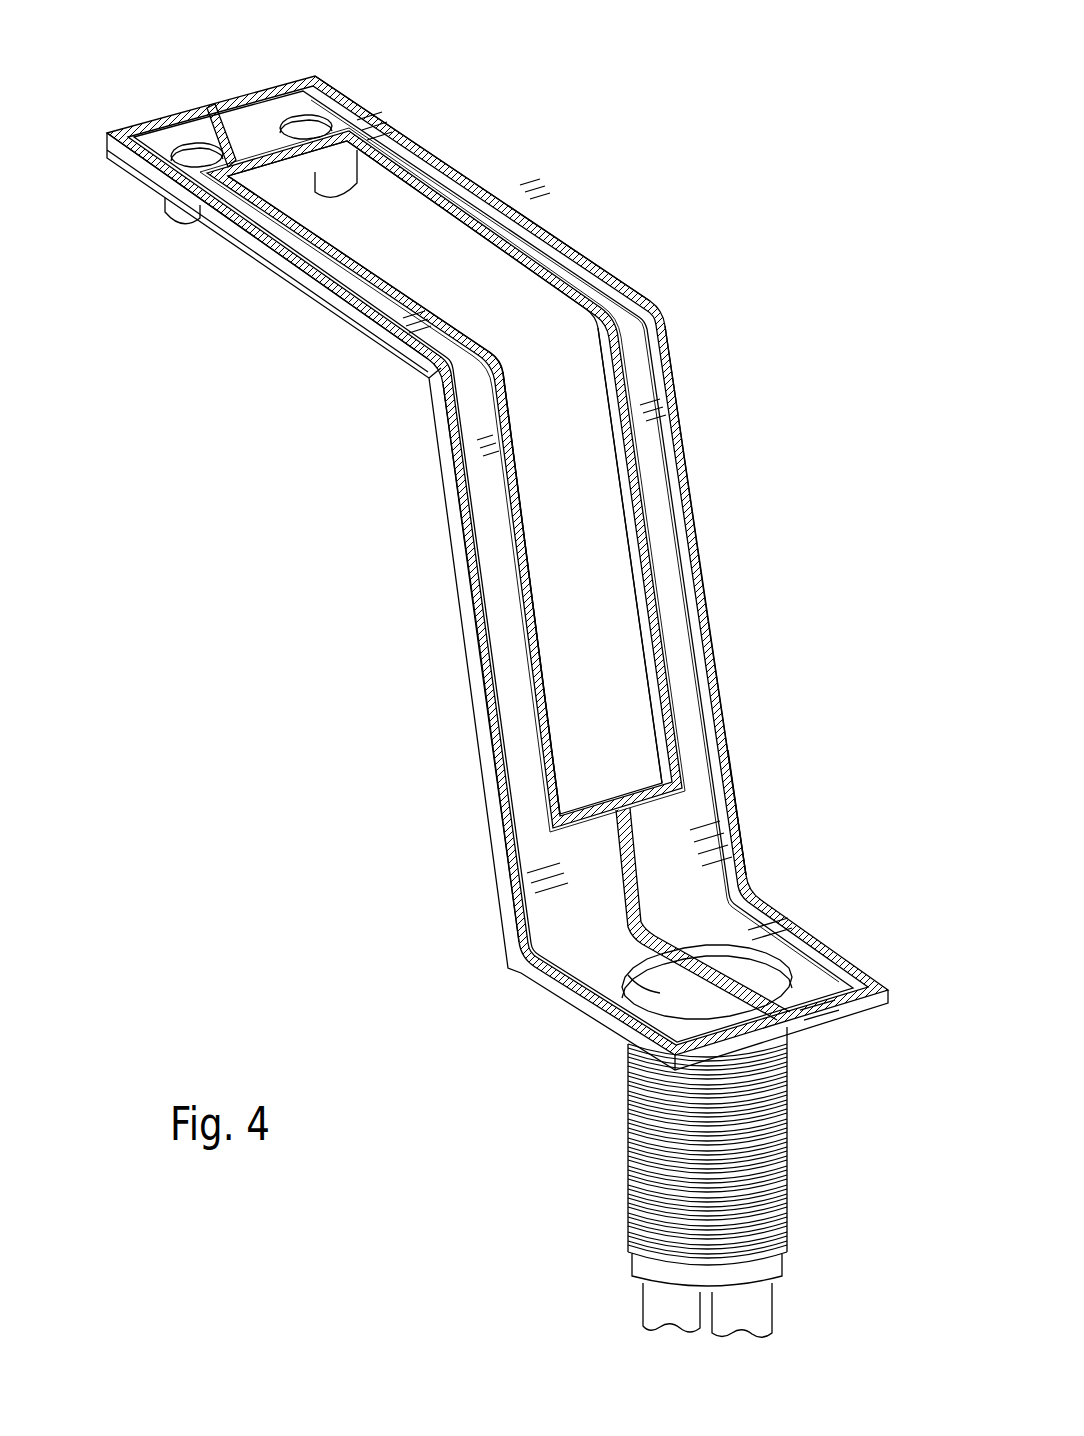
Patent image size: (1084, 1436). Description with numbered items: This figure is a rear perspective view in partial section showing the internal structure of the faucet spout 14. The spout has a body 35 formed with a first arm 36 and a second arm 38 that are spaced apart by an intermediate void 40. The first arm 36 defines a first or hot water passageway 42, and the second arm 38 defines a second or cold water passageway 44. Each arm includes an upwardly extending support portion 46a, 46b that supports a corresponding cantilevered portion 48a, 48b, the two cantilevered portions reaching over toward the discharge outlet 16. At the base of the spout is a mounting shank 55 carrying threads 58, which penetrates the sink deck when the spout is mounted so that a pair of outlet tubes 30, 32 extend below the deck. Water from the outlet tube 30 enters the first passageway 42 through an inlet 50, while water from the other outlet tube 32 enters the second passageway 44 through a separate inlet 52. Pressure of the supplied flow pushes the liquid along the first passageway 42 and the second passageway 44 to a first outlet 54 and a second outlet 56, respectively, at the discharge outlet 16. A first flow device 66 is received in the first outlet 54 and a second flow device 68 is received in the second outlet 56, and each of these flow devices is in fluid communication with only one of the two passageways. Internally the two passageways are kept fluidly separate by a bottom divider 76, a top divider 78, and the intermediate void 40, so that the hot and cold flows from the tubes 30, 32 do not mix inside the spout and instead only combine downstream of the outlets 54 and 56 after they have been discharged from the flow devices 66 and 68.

The faucet spout 14 is at (858, 183).
The discharge outlet 16 is at (177, 228).
The outlet tube 30 is at (752, 1310).
The outlet tube 32 is at (660, 1305).
The body 35 is at (720, 660).
The first arm 36 is at (685, 398).
The second arm 38 is at (460, 500).
The intermediate void 40 is at (527, 318).
The first passageway 42 is at (665, 515).
The second passageway 44 is at (507, 638).
The support portion 46a is at (737, 748).
The support portion 46b is at (495, 740).
The cantilevered portion 48a is at (478, 185).
The cantilevered portion 48b is at (367, 325).
The inlet 50 is at (750, 965).
The inlet 52 is at (640, 968).
The first outlet 54 is at (297, 118).
The mounting shank 55 is at (620, 1135).
The second outlet 56 is at (190, 165).
The threads 58 is at (800, 1185).
The first flow device 66 is at (333, 122).
The second flow device 68 is at (170, 142).
The bottom divider 76 is at (615, 860).
The top divider 78 is at (213, 122).